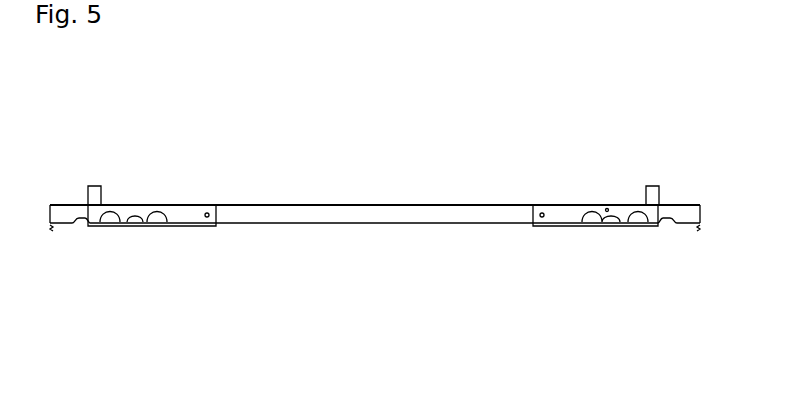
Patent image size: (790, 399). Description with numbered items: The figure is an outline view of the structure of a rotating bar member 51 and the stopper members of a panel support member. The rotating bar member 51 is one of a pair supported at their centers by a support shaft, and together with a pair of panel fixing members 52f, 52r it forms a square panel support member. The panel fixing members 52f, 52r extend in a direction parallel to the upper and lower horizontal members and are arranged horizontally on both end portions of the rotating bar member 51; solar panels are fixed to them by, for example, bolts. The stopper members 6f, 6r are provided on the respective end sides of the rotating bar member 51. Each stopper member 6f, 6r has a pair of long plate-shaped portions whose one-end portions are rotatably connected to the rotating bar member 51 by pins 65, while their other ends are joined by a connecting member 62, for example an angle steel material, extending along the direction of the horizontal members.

The rotating bar member 51 is at (309, 222).
The panel fixing member 52f is at (100, 185).
The panel fixing member 52r is at (654, 185).
The stopper member 6f is at (181, 221).
The stopper member 6r is at (556, 219).
The pin 65 is at (207, 217).
The connecting member 62 is at (52, 234).